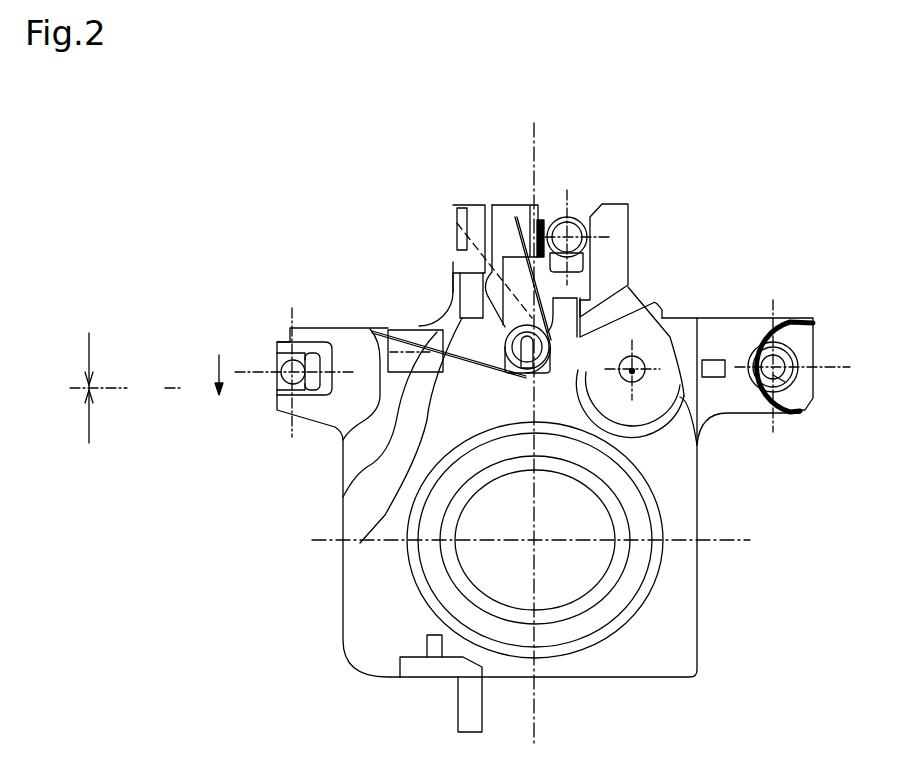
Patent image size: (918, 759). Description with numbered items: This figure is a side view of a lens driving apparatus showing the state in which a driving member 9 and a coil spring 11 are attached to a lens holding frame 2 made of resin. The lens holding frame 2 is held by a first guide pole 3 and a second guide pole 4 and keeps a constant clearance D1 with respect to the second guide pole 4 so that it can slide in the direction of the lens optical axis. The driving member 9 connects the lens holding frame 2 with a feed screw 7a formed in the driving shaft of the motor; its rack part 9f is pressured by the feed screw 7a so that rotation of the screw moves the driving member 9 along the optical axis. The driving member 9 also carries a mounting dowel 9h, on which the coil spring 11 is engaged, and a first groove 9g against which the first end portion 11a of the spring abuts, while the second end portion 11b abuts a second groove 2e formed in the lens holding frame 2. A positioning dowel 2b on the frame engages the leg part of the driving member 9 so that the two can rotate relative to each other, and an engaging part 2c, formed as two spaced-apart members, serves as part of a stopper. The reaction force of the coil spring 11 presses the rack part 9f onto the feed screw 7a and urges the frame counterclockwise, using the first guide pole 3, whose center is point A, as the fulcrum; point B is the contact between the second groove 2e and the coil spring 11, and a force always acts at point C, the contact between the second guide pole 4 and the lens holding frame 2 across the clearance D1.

The lens holding frame 2 is at (688, 622).
The positioning dowel 2b is at (640, 378).
The engaging part 2c is at (453, 263).
The second groove 2e is at (333, 430).
The first guide pole 3 is at (787, 352).
The second guide pole 4 is at (277, 383).
The feed screw 7a is at (577, 223).
The driving member 9 is at (622, 255).
The rack part 9f is at (541, 212).
The first groove 9g is at (507, 243).
The mounting dowel 9h is at (440, 315).
The coil spring 11 is at (360, 543).
The first end portion 11a is at (522, 232).
The second end portion 11b is at (372, 329).
The center of the first guide pole A is at (803, 387).
The contact point between the second groove and the coil spring B is at (343, 497).
The contact point between the second guide pole and the lens holding frame C is at (280, 343).
The constant clearance D1 is at (146, 369).